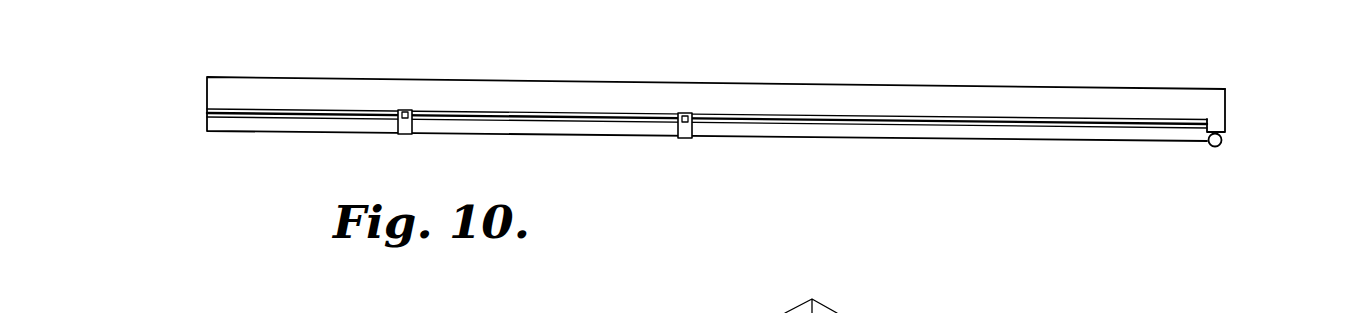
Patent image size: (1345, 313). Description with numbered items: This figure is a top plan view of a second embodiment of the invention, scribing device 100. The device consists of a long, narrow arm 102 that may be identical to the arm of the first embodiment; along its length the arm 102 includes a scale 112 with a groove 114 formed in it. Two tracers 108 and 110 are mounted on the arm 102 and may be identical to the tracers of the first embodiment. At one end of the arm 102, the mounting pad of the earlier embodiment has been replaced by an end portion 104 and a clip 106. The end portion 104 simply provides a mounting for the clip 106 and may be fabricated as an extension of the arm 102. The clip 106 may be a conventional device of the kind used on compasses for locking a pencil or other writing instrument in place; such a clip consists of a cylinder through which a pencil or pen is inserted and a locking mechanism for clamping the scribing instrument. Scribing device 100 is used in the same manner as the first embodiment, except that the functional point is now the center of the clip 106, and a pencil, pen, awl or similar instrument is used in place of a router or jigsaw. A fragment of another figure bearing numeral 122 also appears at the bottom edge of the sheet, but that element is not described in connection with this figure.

The scribing device 100 is at (757, 129).
The arm 102 is at (943, 100).
The end portion 104 is at (1218, 108).
The clip 106 is at (1222, 138).
The tracer 108 is at (405, 134).
The tracer 110 is at (685, 138).
The scale 112 is at (357, 126).
The groove 114 is at (285, 115).
The support bracket 122 is at (858, 300).